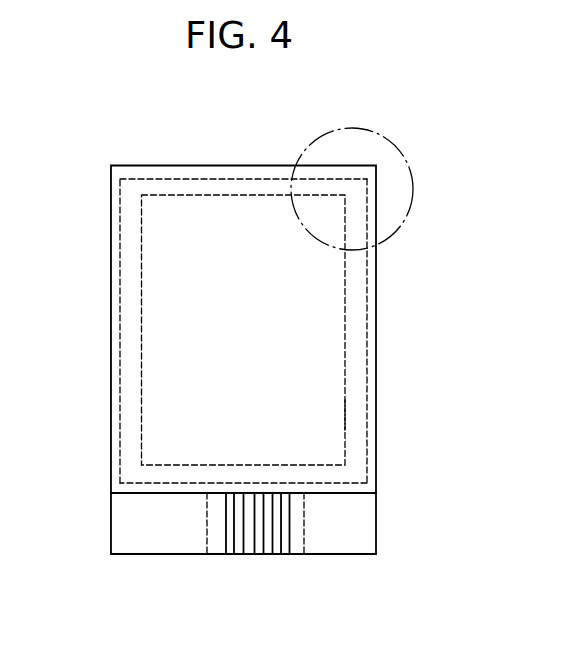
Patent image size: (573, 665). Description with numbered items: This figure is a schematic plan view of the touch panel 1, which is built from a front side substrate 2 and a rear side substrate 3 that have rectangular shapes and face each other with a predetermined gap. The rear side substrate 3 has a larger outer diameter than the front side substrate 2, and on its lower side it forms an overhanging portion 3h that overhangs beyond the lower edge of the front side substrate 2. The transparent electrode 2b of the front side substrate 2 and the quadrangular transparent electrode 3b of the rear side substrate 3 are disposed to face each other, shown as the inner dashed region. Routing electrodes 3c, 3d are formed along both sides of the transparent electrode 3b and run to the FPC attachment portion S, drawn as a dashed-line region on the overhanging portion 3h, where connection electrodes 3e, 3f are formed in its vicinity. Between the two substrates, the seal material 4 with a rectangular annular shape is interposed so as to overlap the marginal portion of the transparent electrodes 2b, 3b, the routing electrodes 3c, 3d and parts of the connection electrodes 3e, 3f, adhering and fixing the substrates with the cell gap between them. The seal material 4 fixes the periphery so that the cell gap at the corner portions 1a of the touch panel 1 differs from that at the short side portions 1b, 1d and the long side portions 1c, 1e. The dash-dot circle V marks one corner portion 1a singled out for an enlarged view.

The touch panel 1 is at (170, 146).
The corner portion 1a is at (128, 196).
The short side portion 1b is at (243, 192).
The long side portion 1c is at (357, 368).
The short side portion 1d is at (166, 472).
The long side portion 1e is at (128, 347).
The front side substrate 2 is at (113, 302).
The transparent electrode 2b is at (179, 330).
The transparent electrode 3b is at (173, 249).
The rear side substrate 3 is at (283, 571).
The overhanging portion 3h is at (340, 526).
The routing electrode 3c is at (246, 548).
The routing electrode 3d is at (285, 548).
The connection electrode 3e is at (228, 548).
The connection electrode 3f is at (268, 548).
The seal material 4 is at (357, 415).
The FPC attachment portion S is at (304, 527).
The enlarged view region V is at (397, 137).